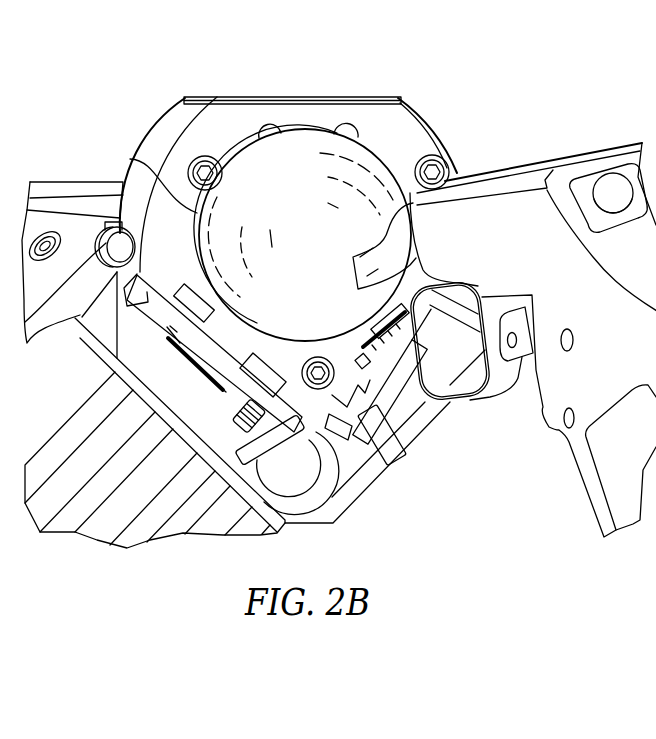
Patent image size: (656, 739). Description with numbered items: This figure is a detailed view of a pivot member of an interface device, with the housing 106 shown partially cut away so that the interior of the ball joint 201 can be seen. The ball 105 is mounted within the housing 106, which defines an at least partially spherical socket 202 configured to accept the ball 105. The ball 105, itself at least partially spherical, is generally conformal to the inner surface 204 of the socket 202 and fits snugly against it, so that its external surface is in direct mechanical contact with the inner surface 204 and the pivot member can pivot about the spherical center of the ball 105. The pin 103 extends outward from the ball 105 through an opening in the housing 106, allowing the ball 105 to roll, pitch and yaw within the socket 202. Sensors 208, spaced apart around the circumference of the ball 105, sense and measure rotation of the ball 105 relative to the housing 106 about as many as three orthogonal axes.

The ball joint 201 is at (449, 110).
The housing 106 is at (293, 88).
The socket 202 is at (250, 143).
The ball 105 is at (340, 150).
The inner surface 204 is at (130, 159).
The pin 103 is at (353, 283).
The sensors 208 is at (233, 342).